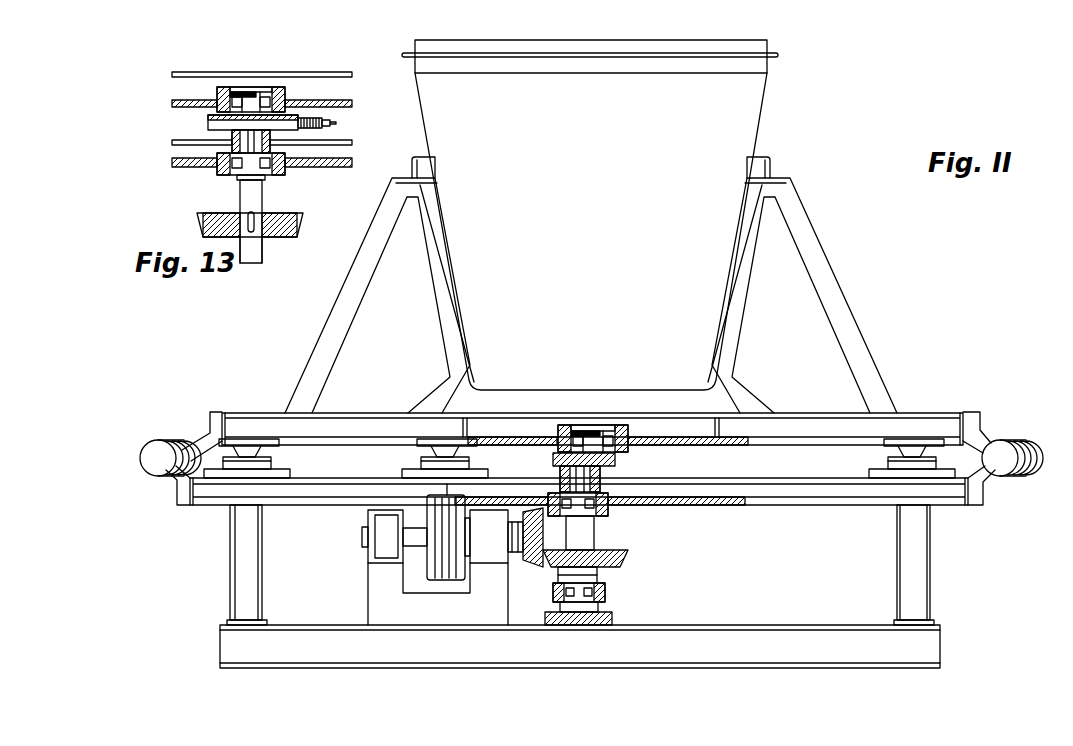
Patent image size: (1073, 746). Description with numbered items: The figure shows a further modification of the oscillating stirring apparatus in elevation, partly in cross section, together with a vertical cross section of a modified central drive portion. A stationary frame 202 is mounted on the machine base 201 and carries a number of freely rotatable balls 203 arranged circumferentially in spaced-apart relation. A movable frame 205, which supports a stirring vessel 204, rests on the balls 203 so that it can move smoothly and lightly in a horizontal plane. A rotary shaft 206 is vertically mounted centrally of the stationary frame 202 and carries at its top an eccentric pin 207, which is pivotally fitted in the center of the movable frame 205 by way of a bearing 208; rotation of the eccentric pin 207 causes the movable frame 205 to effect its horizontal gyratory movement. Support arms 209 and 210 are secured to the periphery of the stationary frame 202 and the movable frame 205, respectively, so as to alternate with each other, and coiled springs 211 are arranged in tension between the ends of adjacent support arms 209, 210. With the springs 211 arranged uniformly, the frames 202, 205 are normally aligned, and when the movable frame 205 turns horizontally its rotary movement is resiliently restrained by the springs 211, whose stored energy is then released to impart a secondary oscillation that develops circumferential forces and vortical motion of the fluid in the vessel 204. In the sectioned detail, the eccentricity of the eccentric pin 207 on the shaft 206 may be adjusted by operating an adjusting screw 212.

In FIG. 11, the machine base 201 is at (220, 628).
In FIG. 11, the stationary frame 202 is at (220, 500).
In FIG. 13, the stationary frame 202 is at (310, 167).
In FIG. 11, the freely rotatable balls 203 is at (247, 443).
In FIG. 11, the stirring vessel 204 is at (762, 106).
In FIG. 11, the movable frame 205 is at (383, 412).
In FIG. 13, the movable frame 205 is at (212, 62).
In FIG. 11, the rotary shaft 206 is at (598, 527).
In FIG. 13, the rotary shaft 206 is at (240, 193).
In FIG. 11, the eccentric pin 207 is at (600, 428).
In FIG. 13, the eccentric pin 207 is at (250, 96).
In FIG. 11, the bearing 208 is at (624, 428).
In FIG. 13, the bearing 208 is at (283, 102).
In FIG. 11, the support arm 209 is at (208, 432).
In FIG. 11, the support arm 210 is at (182, 494).
In FIG. 11, the coiled spring 211 is at (148, 428).
In FIG. 13, the adjusting screw 212 is at (336, 124).